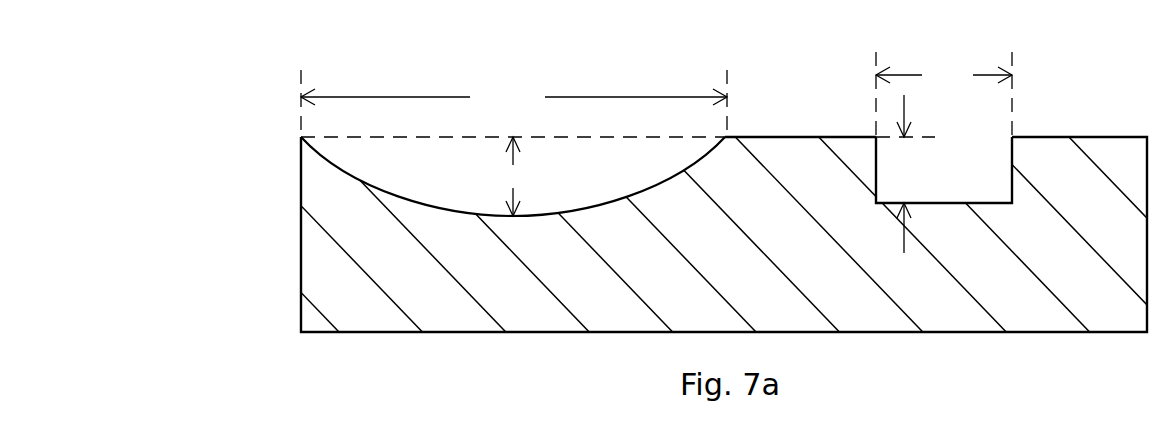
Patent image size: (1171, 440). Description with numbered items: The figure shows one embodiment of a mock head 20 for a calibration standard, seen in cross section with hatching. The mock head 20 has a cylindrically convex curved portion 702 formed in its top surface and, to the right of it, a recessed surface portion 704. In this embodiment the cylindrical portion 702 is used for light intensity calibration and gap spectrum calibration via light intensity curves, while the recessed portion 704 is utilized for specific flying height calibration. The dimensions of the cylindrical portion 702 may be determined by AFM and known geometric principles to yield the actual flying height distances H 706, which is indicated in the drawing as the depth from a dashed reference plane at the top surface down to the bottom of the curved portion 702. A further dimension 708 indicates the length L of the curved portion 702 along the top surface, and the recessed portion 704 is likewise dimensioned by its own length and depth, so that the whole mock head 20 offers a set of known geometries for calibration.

The mock head 20 is at (328, 267).
The cylindrically convex portion 702 is at (408, 173).
The recessed surface portion 704 is at (990, 152).
The flying height distance H 706 is at (524, 160).
The recess length dimension 708 is at (500, 80).